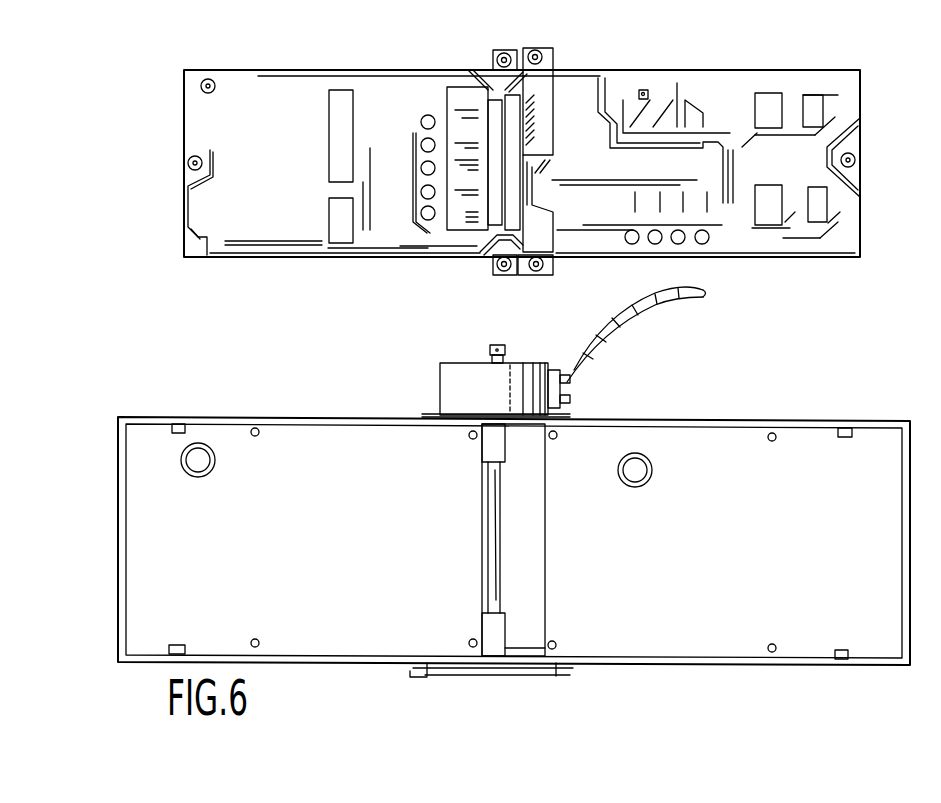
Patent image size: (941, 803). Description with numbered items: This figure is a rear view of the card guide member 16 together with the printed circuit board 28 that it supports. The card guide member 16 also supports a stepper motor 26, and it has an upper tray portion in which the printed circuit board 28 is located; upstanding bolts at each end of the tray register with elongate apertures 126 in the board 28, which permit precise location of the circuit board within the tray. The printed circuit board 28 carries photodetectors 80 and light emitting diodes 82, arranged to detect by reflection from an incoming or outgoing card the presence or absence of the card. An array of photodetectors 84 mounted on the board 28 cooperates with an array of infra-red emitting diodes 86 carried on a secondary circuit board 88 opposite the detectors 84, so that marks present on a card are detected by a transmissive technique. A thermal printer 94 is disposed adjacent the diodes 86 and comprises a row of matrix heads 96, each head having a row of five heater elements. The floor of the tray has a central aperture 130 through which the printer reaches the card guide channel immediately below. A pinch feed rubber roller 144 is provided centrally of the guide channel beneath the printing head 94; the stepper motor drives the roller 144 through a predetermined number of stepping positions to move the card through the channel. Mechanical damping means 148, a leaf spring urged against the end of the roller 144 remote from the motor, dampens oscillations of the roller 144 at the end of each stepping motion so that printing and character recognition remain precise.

The card guide member 16 is at (668, 666).
The stepper motor 26 is at (445, 385).
The printed circuit board 28 is at (195, 254).
The photodetectors 80 is at (440, 64).
The light emitting diodes 82 is at (205, 82).
The array of photodetectors 84 is at (548, 80).
The infra-red emitting diodes 86 is at (523, 50).
The secondary circuit board 88 is at (547, 265).
The thermal printer 94 is at (486, 112).
The matrix heads 96 is at (500, 100).
The apertures 126 is at (188, 163).
The central aperture 130 is at (540, 581).
The pinch feed rubber roller 144 is at (490, 570).
The mechanical damping means 148 is at (445, 672).